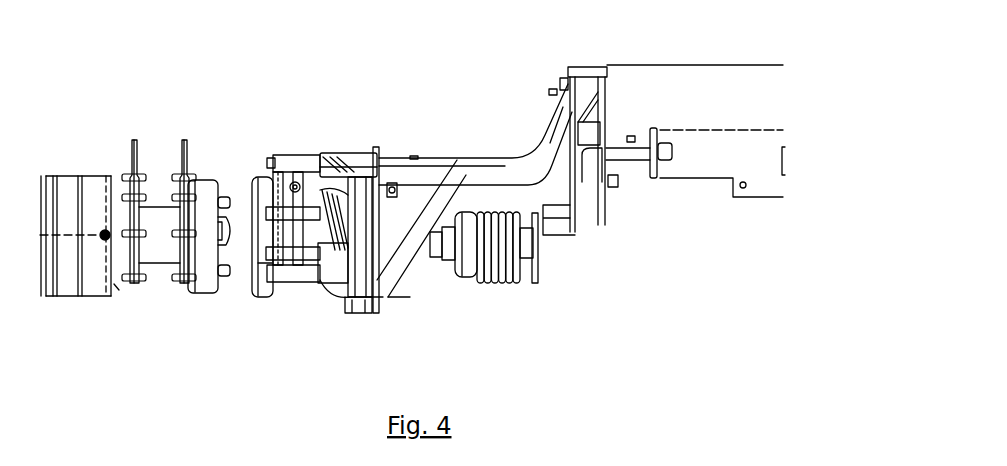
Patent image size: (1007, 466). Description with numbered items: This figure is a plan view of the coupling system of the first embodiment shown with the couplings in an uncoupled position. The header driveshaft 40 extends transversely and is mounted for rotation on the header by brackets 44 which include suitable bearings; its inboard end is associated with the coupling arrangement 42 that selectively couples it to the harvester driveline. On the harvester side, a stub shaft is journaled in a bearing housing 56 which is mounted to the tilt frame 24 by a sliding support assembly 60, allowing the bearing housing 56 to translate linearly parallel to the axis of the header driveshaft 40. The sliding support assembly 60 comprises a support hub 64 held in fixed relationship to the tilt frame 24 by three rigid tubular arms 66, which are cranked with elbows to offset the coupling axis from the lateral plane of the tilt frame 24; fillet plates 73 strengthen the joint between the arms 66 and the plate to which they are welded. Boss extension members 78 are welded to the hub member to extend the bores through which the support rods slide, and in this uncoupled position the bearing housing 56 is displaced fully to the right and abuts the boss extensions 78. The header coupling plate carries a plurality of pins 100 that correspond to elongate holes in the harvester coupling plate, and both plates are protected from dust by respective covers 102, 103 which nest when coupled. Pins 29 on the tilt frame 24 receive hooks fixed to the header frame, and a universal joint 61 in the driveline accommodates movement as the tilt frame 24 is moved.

The tilt frame 24 is at (655, 77).
The pins 29 is at (633, 157).
The header driveshaft 40 is at (70, 283).
The coupling arrangement 42 is at (238, 128).
The brackets 44 is at (158, 250).
The bearing housing 56 is at (303, 158).
The sliding support assembly 60 is at (467, 103).
The universal joint 61 is at (521, 280).
The support hub 64 is at (378, 148).
The tubular arms 66 is at (425, 170).
The fillet plates 73 is at (400, 273).
The boss extension members 78 is at (337, 153).
The pins 100 is at (228, 202).
The cover 102 is at (260, 293).
The cover 103 is at (205, 283).